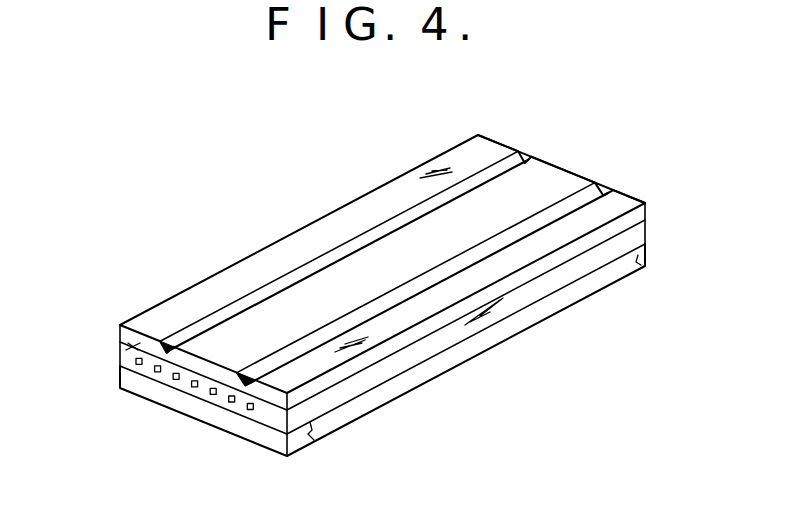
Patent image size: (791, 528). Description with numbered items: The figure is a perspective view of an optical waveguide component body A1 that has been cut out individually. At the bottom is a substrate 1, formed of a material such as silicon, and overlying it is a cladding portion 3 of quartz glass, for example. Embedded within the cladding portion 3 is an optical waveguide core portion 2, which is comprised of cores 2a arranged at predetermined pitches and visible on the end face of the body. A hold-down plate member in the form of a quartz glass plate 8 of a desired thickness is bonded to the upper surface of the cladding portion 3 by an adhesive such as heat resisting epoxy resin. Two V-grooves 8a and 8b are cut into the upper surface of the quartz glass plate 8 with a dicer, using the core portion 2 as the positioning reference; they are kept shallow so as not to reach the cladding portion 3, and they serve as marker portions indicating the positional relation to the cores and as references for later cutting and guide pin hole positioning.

The substrate 1 is at (360, 405).
The optical waveguide core portion 2 is at (170, 432).
The core 2a is at (177, 488).
The cladding portion 3 is at (270, 417).
The quartz glass plate 8 is at (330, 223).
The V-groove 8a is at (242, 305).
The V-groove 8b is at (395, 305).
The optical waveguide component body A1 is at (560, 327).